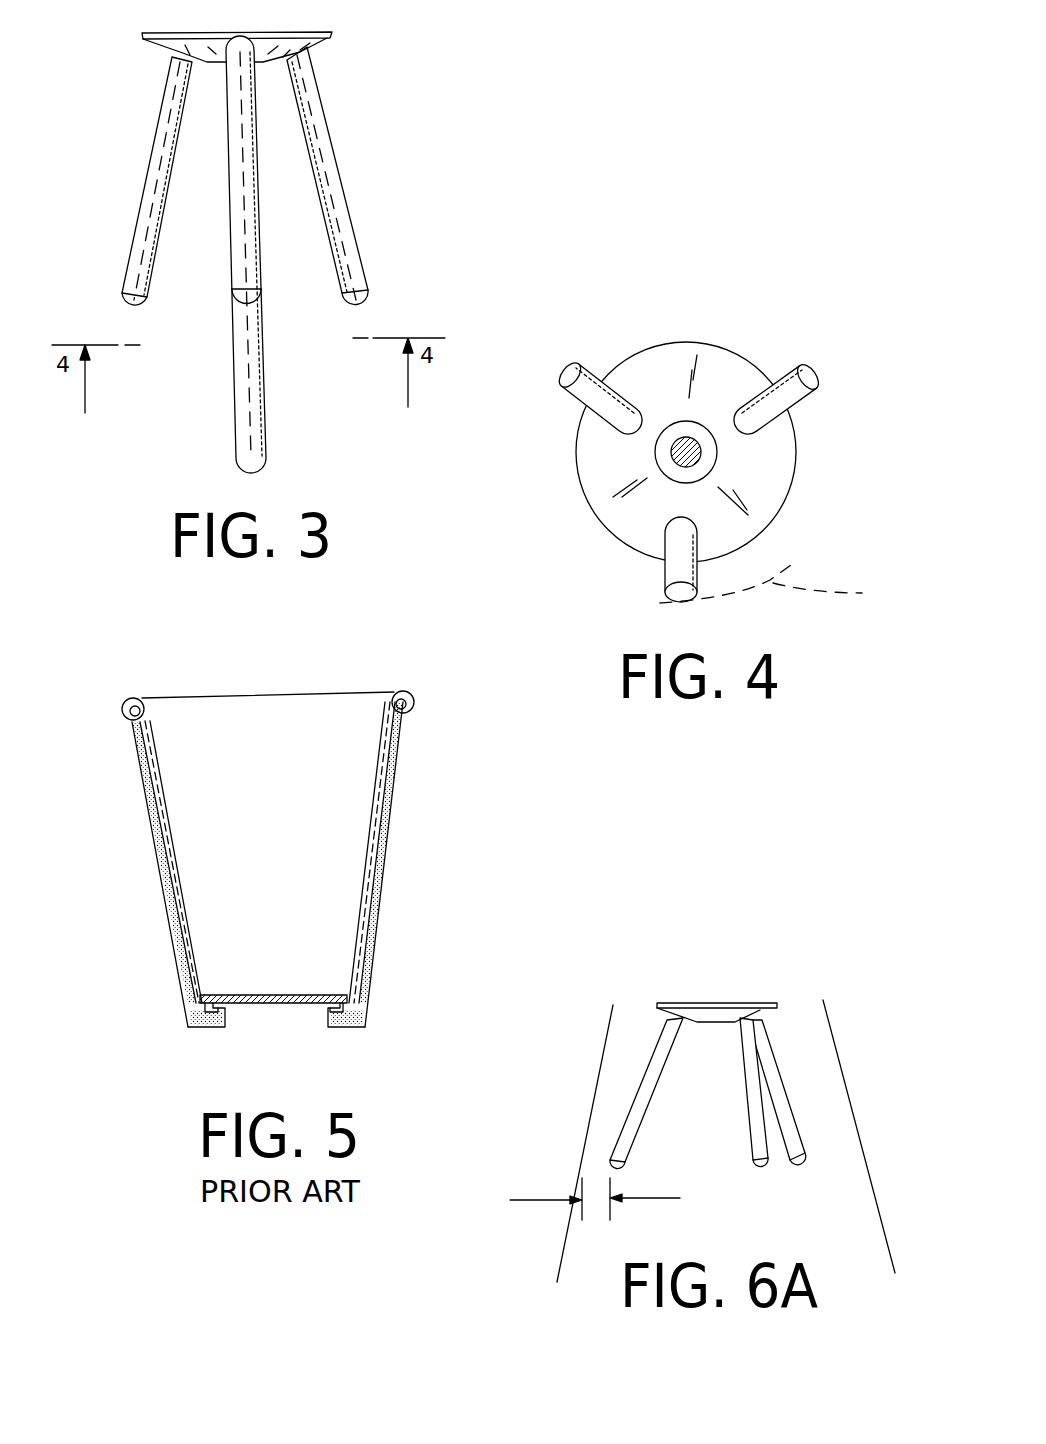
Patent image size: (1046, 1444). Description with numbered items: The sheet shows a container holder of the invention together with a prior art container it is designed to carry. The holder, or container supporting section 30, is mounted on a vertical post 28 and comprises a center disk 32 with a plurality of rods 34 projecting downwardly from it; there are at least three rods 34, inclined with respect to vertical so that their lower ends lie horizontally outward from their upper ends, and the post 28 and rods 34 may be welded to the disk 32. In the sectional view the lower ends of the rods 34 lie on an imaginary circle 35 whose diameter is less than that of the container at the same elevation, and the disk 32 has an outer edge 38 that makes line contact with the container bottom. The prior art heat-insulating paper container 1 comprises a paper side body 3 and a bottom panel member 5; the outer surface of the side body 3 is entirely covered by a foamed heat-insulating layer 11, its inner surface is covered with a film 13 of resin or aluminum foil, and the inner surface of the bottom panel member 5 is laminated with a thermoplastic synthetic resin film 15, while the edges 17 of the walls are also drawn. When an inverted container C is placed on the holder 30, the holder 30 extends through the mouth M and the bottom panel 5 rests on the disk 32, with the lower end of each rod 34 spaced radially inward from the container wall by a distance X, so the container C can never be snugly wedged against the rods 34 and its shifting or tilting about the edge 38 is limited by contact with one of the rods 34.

In FIG. 5, the heat-insulating paper container 1 is at (290, 864).
In FIG. 5, the side body 3 is at (363, 870).
In FIG. 5, the bottom panel member 5 is at (310, 995).
In FIG. 5, the foamed heat-insulating layer 11 is at (160, 888).
In FIG. 5, the film 13 is at (163, 798).
In FIG. 5, the thermoplastic synthetic resin film 15 is at (250, 995).
In FIG. 5, the seam/foot 17 is at (152, 827).
In FIG. 3, the vertical post 28 is at (262, 367).
In FIG. 4, the vertical post 28 is at (702, 452).
In FIG. 3, the container supporting section 30 is at (252, 236).
In FIG. 4, the container supporting section 30 is at (725, 446).
In FIG. 6A, the container supporting section 30 is at (626, 1081).
In FIG. 3, the center disk 32 is at (332, 33).
In FIG. 4, the center disk 32 is at (742, 372).
In FIG. 3, the rods 34 is at (137, 227).
In FIG. 4, the rods 34 is at (585, 360).
In FIG. 4, the imaginary circle 35 is at (778, 584).
In FIG. 4, the outer edge 38 is at (795, 475).
In FIG. 5, the mouth M is at (176, 673).
In FIG. 6A, the container C is at (845, 1075).
In FIG. 6A, the distance x X is at (590, 1193).